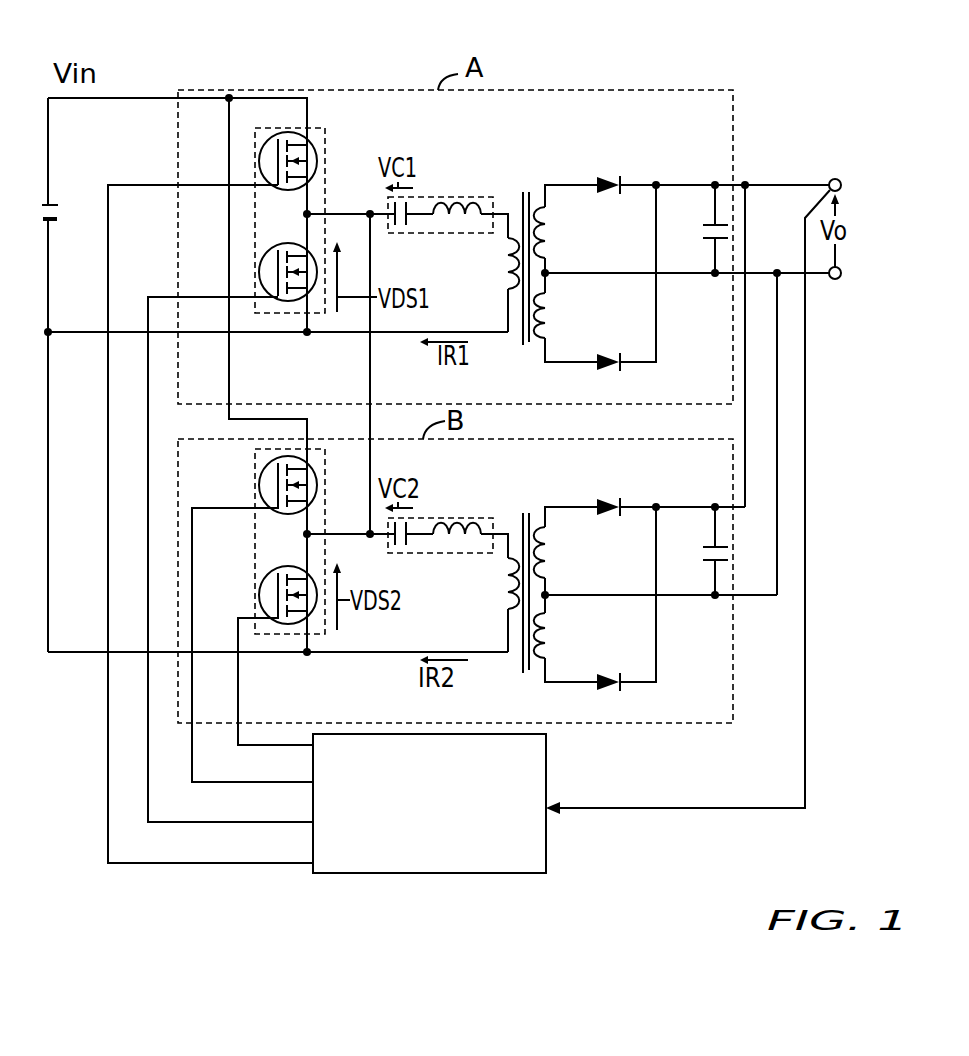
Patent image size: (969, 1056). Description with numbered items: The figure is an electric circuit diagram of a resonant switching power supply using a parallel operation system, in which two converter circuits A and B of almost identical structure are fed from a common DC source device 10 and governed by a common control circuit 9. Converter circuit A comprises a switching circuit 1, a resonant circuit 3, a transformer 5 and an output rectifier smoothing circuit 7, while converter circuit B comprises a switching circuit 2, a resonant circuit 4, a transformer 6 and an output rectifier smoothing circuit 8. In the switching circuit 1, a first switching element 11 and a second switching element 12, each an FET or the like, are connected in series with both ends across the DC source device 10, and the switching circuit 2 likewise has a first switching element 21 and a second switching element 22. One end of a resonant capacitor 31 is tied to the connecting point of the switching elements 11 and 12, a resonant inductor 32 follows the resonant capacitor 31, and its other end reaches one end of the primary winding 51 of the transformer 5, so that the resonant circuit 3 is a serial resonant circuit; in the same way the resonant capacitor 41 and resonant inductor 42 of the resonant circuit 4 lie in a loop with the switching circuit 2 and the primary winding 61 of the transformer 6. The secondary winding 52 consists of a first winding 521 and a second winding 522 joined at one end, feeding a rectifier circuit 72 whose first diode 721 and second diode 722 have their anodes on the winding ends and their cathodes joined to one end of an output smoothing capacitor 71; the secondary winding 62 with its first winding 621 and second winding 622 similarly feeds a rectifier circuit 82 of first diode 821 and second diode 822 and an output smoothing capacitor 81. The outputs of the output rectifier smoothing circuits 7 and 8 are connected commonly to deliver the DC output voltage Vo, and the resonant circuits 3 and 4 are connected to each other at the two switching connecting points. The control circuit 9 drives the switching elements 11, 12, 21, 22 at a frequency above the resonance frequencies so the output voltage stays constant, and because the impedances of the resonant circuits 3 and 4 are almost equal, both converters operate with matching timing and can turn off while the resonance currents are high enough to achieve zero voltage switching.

The switching circuit 1 is at (326, 128).
The switching circuit 2 is at (252, 470).
The resonant circuit 3 is at (443, 234).
The resonant circuit 4 is at (432, 554).
The transformer 5 is at (523, 345).
The transformer 6 is at (523, 673).
The output rectifier smoothing circuit 7 is at (688, 163).
The output rectifier smoothing circuit 8 is at (688, 485).
The control circuit 9 is at (546, 757).
The DC source device 10 is at (60, 214).
The first switching element 11 is at (318, 160).
The second switching element 12 is at (258, 271).
The first switching element 21 is at (318, 485).
The second switching element 22 is at (256, 592).
The resonant capacitor 31 is at (400, 226).
The resonant inductor 32 is at (458, 204).
The resonant capacitor 41 is at (400, 546).
The resonant inductor 42 is at (458, 524).
The primary winding 51 is at (505, 267).
The secondary winding 52 is at (547, 208).
The first winding 521 is at (550, 218).
The second winding 522 is at (550, 300).
The primary winding 61 is at (505, 587).
The secondary winding 62 is at (547, 528).
The first winding 621 is at (550, 538).
The second winding 622 is at (550, 622).
The output smoothing capacitor 71 is at (706, 230).
The rectifier circuit 72 is at (627, 262).
The first diode 721 is at (600, 181).
The second diode 722 is at (600, 357).
The output smoothing capacitor 81 is at (706, 552).
The rectifier circuit 82 is at (627, 583).
The first diode 821 is at (600, 503).
The second diode 822 is at (600, 677).